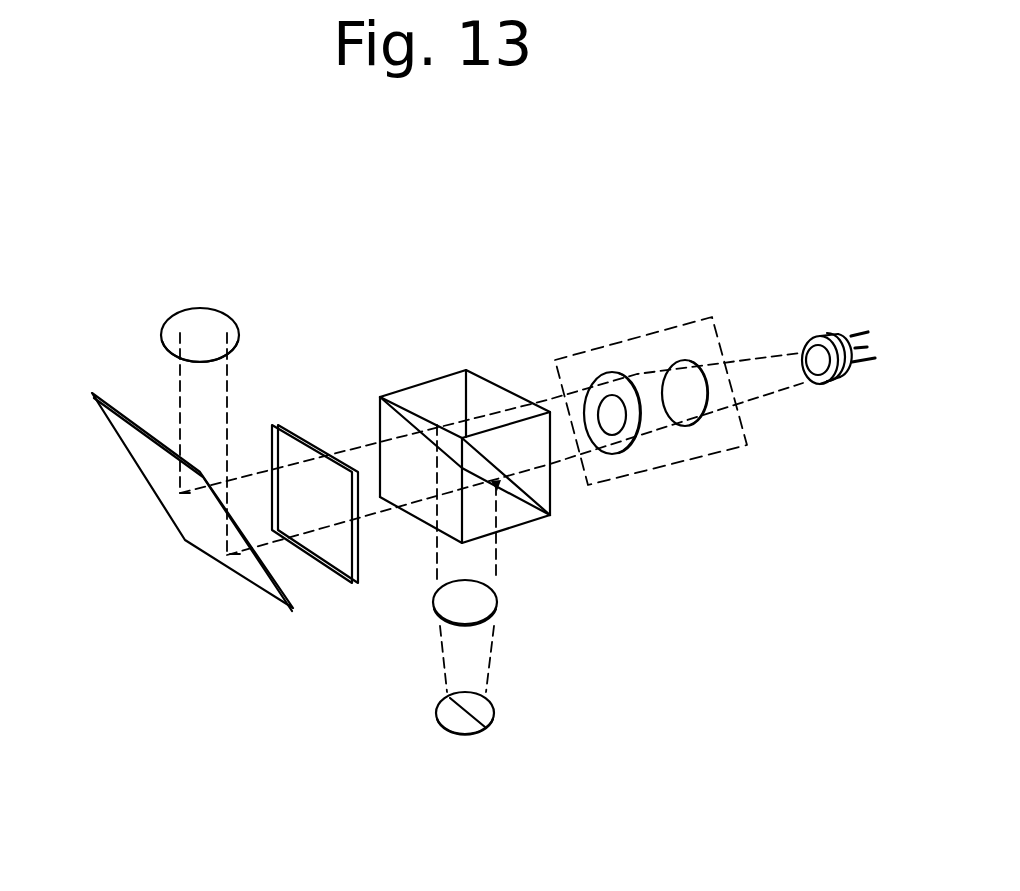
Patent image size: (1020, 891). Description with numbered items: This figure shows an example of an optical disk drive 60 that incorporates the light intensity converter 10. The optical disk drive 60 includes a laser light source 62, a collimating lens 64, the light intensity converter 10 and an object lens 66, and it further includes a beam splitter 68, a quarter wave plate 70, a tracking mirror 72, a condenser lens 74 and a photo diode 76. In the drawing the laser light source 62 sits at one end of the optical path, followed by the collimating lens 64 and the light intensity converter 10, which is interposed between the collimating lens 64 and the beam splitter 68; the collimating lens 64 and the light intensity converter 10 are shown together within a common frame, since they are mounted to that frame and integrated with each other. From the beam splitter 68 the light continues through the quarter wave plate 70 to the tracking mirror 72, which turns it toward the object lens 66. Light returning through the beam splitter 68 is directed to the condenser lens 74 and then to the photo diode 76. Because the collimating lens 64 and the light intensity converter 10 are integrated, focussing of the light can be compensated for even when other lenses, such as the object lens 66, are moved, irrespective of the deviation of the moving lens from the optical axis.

The optical disk drive 60 is at (583, 239).
The laser light source 62 is at (826, 334).
The collimating lens 64 is at (685, 362).
The light intensity converter 10 is at (612, 374).
The beam splitter 68 is at (437, 390).
The object lens 66 is at (218, 325).
The tracking mirror 72 is at (148, 468).
The ¼ wave plate 70 is at (338, 555).
The condenser lens 74 is at (483, 606).
The photo diode 76 is at (495, 708).